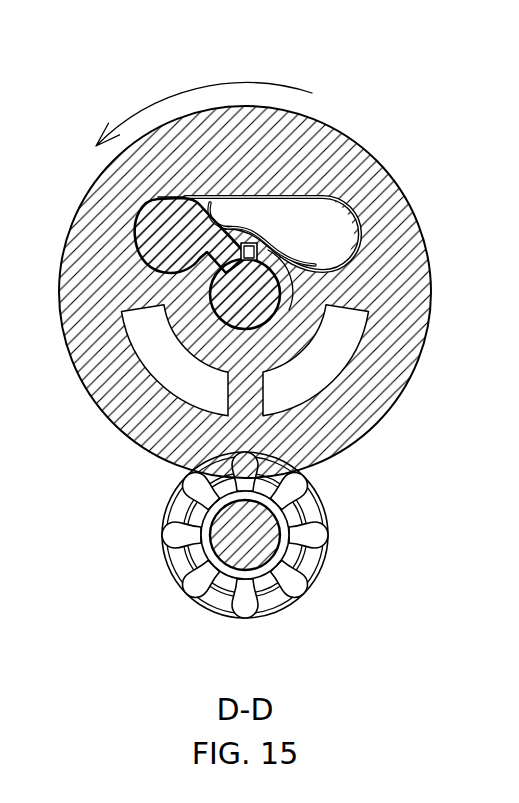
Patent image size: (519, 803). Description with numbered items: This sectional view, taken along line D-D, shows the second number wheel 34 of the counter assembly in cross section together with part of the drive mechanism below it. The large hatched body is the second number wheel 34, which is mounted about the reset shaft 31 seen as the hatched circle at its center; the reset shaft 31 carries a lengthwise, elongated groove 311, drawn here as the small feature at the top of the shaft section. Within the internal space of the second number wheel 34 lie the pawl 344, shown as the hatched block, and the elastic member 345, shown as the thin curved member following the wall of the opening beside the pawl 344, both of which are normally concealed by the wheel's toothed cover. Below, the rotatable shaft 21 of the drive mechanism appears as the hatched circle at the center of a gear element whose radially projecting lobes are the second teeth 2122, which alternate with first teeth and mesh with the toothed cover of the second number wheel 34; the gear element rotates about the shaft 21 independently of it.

The rotatable shaft 21 is at (335, 546).
The second teeth 2122 is at (315, 535).
The second number wheel 34 is at (421, 141).
The reset shaft 31 is at (262, 297).
The elongated groove 311 is at (252, 243).
The pawl 344 is at (175, 215).
The elastic member 345 is at (328, 168).